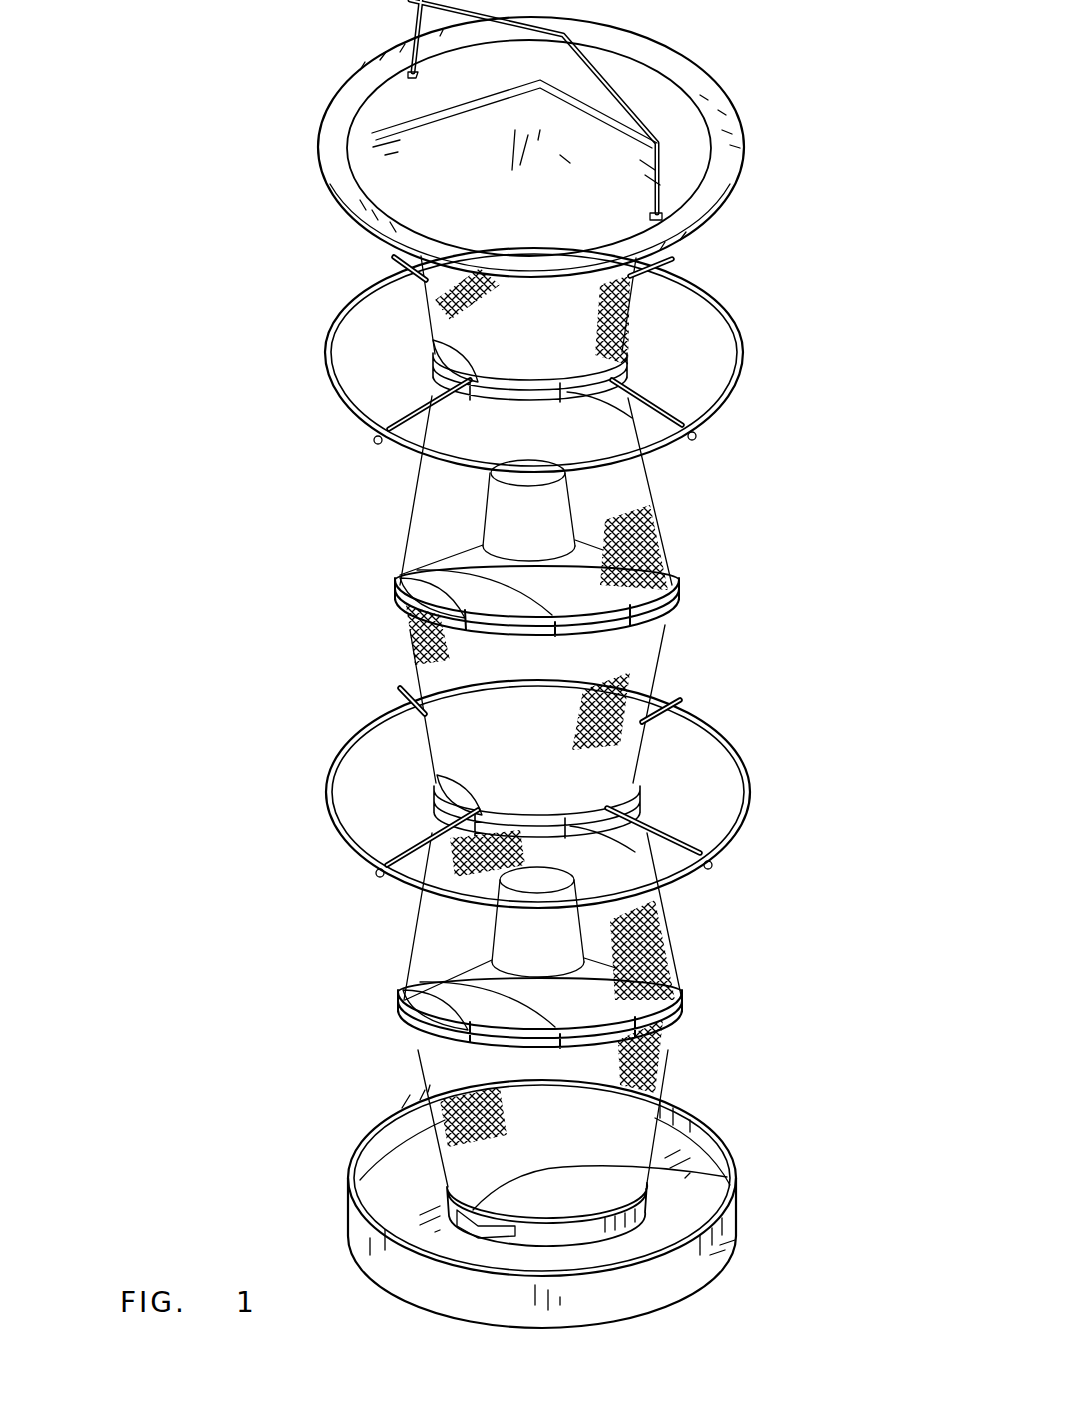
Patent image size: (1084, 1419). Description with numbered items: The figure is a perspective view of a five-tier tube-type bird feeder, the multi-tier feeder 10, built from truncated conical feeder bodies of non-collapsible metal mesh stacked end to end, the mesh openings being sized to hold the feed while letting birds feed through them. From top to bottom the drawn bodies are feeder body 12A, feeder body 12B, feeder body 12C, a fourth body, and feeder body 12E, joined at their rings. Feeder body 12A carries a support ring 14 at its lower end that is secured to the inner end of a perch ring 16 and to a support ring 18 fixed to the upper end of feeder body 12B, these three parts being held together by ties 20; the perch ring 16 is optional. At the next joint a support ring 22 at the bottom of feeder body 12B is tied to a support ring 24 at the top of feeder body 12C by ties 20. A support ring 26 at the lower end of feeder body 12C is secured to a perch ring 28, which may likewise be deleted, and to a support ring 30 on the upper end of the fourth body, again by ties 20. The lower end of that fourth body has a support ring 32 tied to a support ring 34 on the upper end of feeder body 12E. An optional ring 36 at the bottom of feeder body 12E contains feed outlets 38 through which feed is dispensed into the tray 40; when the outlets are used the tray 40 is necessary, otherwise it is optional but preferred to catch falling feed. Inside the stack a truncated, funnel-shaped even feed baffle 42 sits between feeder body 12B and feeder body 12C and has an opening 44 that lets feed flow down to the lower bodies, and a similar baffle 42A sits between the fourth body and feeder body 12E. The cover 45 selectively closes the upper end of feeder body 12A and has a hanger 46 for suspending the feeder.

The multi-tier feeder 10 is at (342, 490).
The feeder body 12A is at (640, 265).
The feeder body 12B is at (642, 503).
The feeder body 12C is at (638, 643).
The feeder body 12E is at (638, 1118).
The support ring 14 is at (630, 347).
The perch ring 16 is at (745, 348).
The support ring 18 is at (618, 420).
The ties 20 is at (620, 377).
The support ring 22 is at (672, 573).
The support ring 24 is at (675, 590).
The support ring 26 is at (632, 780).
The perch ring 28 is at (750, 792).
The support ring 30 is at (670, 873).
The support ring 32 is at (680, 980).
The support ring 34 is at (680, 992).
The ring 36 is at (640, 1213).
The feed outlets 38 is at (600, 1165).
The tray 40 is at (348, 1183).
The even feed baffle 42 is at (470, 531).
The baffle 42A is at (505, 944).
The opening 44 is at (590, 455).
The cover 45 is at (728, 170).
The hanger 46 is at (580, 25).